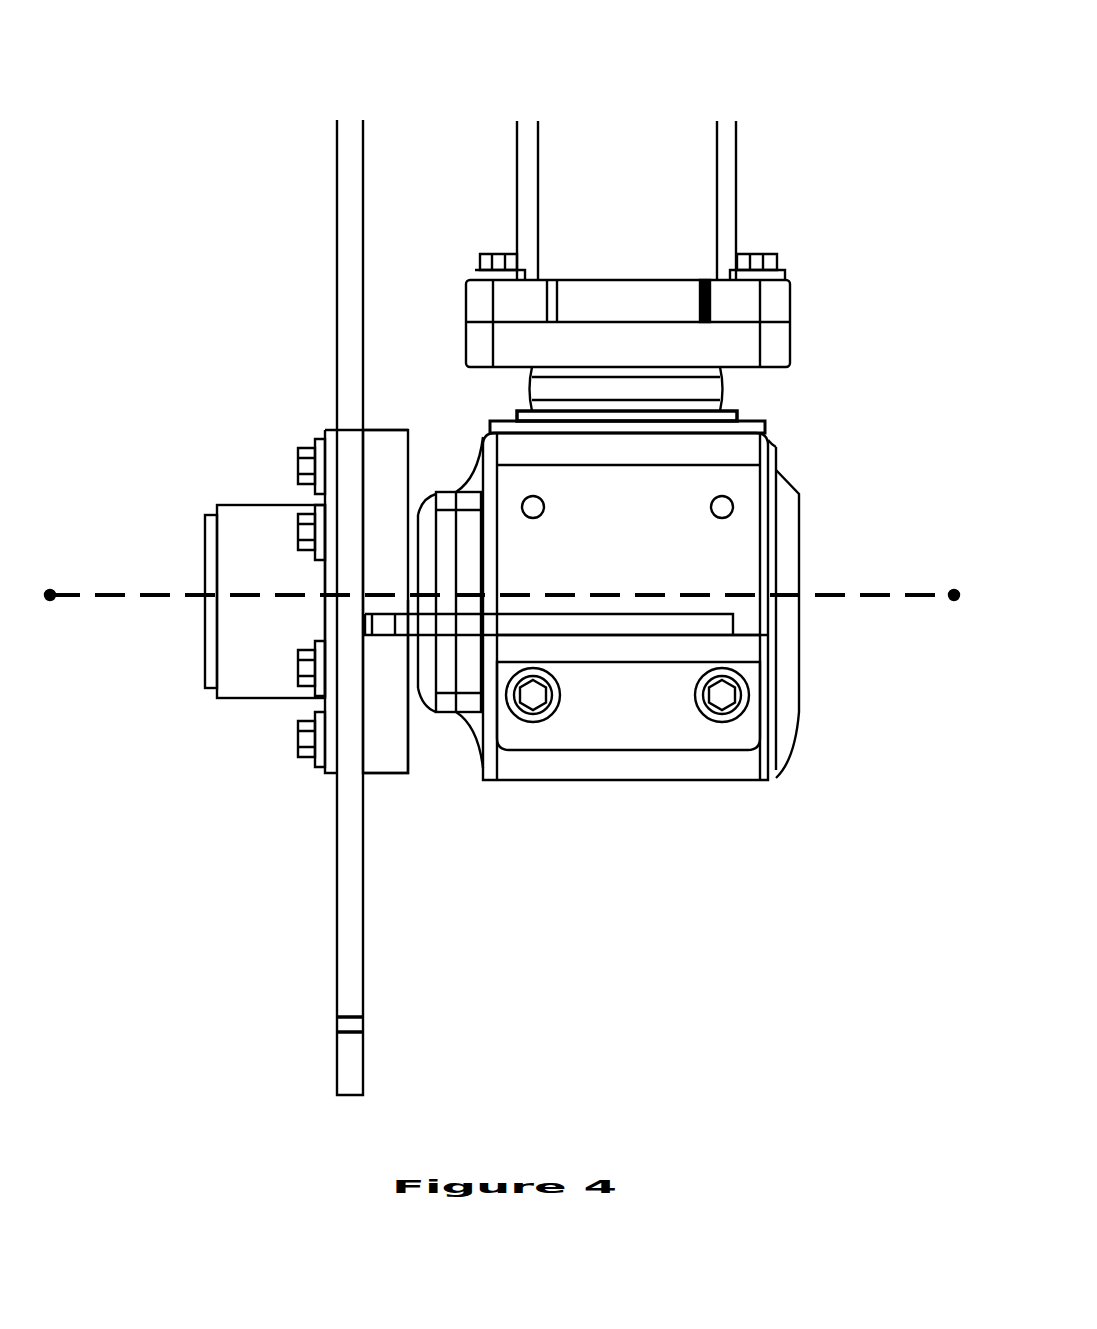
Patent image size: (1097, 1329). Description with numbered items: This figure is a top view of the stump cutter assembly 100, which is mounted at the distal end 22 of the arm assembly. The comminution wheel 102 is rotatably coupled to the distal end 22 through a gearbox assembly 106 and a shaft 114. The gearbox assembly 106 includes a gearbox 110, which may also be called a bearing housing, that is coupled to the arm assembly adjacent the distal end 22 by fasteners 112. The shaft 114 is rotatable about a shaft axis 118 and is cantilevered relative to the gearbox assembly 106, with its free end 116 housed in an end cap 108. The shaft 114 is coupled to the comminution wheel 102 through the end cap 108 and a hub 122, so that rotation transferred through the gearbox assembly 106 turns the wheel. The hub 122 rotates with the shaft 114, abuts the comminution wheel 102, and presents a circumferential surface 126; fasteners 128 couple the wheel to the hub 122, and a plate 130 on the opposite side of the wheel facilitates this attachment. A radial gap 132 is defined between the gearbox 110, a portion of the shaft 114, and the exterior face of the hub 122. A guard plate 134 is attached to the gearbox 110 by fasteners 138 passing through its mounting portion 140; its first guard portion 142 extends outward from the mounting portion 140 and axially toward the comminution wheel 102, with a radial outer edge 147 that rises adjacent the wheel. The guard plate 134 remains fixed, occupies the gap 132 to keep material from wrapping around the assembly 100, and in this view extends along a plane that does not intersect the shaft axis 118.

The stump cutter assembly 100 is at (778, 128).
The comminution wheel 102 is at (350, 158).
The gearbox assembly 106 is at (812, 568).
The end cap 108 is at (247, 670).
The gearbox 110 is at (729, 565).
The fasteners 112 is at (760, 260).
The shaft 114 is at (403, 680).
The free end 116 is at (197, 535).
The shaft axis 118 is at (112, 597).
The hub 122 is at (393, 450).
The circumferential surface 126 is at (382, 497).
The fasteners 128 is at (303, 467).
The plate 130 is at (327, 702).
The radial gap 132 is at (447, 761).
The guard plate 134 is at (684, 625).
The fasteners 138 is at (719, 693).
The mounting portion 140 is at (653, 730).
The first guard portion 142 is at (622, 625).
The radial outer edge 147 is at (547, 622).
The distal end 22 is at (800, 323).